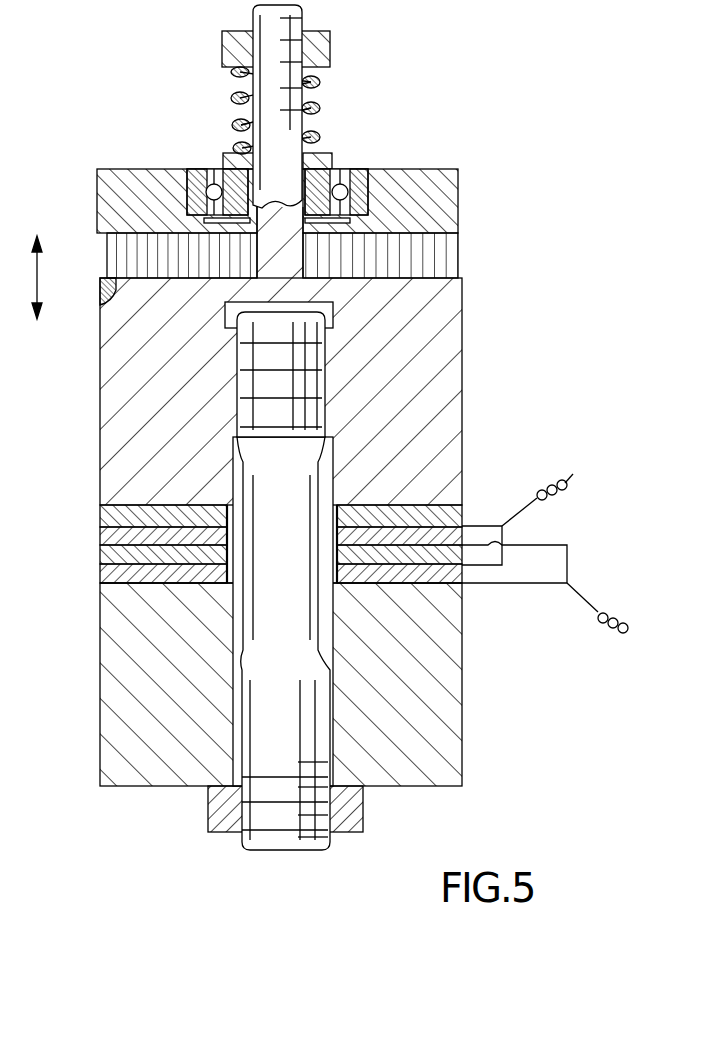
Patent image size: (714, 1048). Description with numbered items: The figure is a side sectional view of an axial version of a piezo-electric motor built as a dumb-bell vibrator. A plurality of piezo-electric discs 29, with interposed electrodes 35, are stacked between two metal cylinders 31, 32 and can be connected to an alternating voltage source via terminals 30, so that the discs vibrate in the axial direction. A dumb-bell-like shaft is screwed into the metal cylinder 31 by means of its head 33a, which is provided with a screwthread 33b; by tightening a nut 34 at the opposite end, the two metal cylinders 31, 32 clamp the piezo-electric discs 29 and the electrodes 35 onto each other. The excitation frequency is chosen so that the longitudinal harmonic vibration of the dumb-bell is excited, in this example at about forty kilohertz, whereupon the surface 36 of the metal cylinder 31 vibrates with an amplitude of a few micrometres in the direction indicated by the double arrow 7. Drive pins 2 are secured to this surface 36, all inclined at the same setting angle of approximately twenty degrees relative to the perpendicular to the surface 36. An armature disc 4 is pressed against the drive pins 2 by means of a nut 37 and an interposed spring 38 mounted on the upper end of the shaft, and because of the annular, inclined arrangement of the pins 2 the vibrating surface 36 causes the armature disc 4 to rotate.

The drive pins 2 is at (442, 258).
The armature disc 4 is at (458, 192).
The double arrow 7 is at (35, 268).
The piezo-electric discs 29 is at (102, 518).
The terminals 30 is at (612, 610).
The metal cylinder 31 is at (455, 470).
The metal cylinder 32 is at (452, 673).
The head 33a is at (282, 396).
The screwthread 33b is at (300, 356).
The nut 34 is at (360, 815).
The electrodes 35 is at (122, 587).
The surface 36 is at (100, 275).
The nut 37 is at (330, 42).
The spring 38 is at (322, 110).